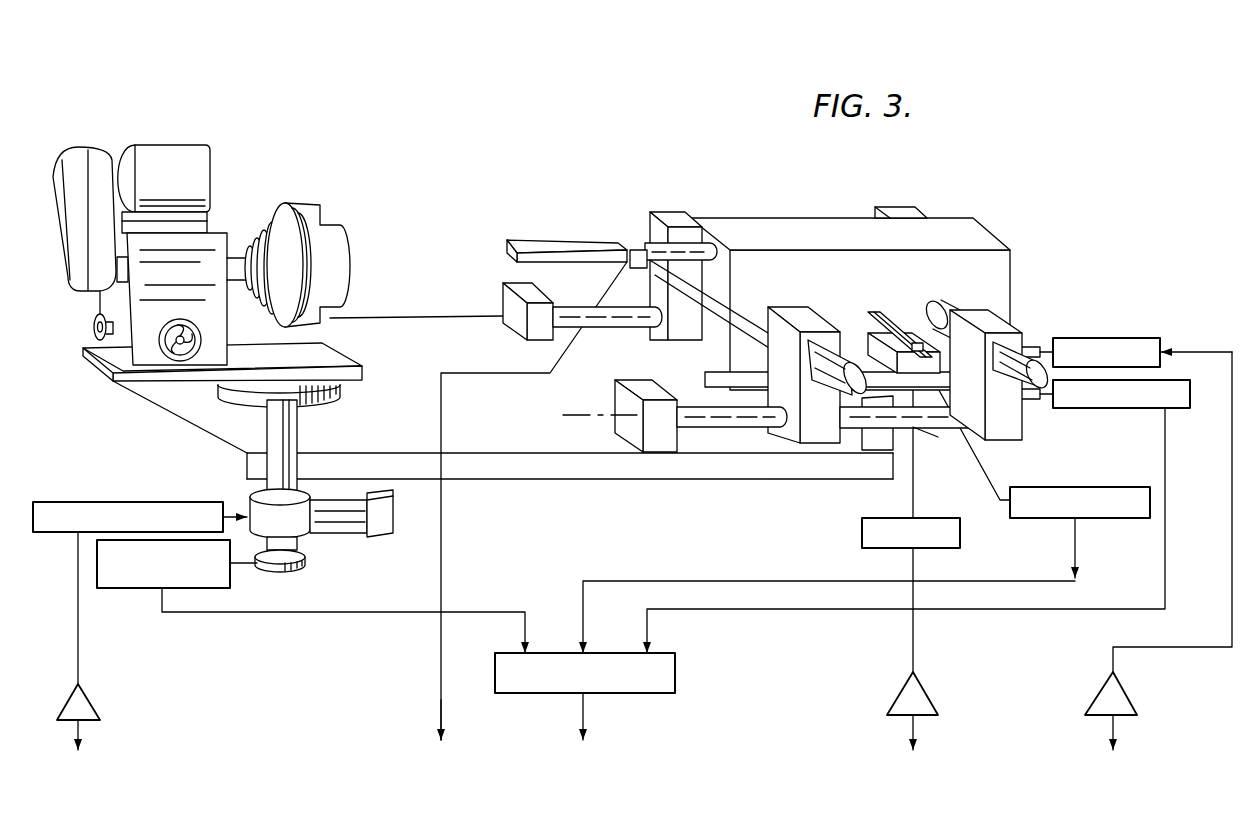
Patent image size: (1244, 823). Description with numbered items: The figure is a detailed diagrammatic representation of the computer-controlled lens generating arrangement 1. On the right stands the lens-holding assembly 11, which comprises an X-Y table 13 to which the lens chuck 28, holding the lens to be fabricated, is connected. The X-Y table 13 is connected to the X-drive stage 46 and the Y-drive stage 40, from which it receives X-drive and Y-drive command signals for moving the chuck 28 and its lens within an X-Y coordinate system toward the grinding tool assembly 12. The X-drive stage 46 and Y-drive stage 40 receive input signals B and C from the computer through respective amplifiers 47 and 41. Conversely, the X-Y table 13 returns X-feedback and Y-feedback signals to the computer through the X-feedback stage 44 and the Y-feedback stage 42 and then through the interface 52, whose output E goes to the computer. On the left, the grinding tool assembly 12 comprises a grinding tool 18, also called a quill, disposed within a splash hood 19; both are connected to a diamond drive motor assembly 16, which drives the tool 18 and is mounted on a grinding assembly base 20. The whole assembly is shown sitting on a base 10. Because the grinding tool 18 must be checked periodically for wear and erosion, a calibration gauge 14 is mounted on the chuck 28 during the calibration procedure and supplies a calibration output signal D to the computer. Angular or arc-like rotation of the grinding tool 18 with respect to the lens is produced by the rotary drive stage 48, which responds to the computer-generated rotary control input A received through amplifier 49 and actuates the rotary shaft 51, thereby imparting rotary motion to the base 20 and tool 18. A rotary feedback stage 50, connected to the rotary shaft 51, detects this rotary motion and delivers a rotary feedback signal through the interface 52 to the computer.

The lens generating arrangement 1 is at (1155, 162).
The base 10 is at (560, 500).
The lens-holding assembly 11 is at (983, 160).
The grinding tool assembly 12 is at (378, 103).
The X-Y table 13 is at (809, 214).
The calibration gauge 14 is at (553, 237).
The diamond drive motor assembly 16 is at (133, 142).
The grinding tool 18 is at (263, 227).
The splash hood 19 is at (303, 206).
The grinding assembly base 20 is at (333, 360).
The lens chuck 28 is at (635, 238).
The Y-drive stage 40 is at (1110, 337).
The amplifier 41 is at (1126, 688).
The Y-feedback stage 42 is at (1077, 410).
The X-feedback stage 44 is at (1068, 487).
The X-drive stage 46 is at (935, 517).
The amplifier 47 is at (928, 692).
The rotary drive stage 48 is at (125, 503).
The amplifier 49 is at (92, 697).
The rotary feedback stage 50 is at (118, 590).
The rotary shaft 51 is at (297, 430).
The interface 52 is at (677, 668).